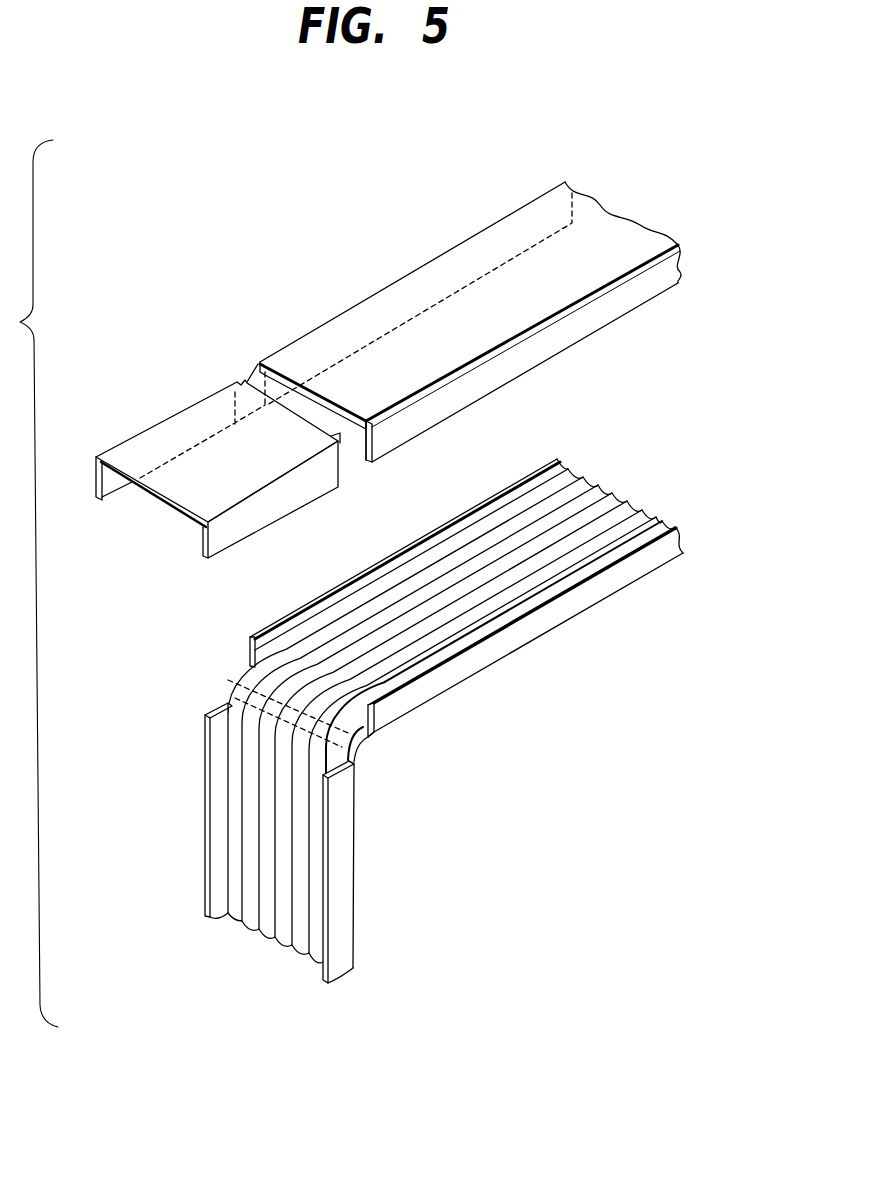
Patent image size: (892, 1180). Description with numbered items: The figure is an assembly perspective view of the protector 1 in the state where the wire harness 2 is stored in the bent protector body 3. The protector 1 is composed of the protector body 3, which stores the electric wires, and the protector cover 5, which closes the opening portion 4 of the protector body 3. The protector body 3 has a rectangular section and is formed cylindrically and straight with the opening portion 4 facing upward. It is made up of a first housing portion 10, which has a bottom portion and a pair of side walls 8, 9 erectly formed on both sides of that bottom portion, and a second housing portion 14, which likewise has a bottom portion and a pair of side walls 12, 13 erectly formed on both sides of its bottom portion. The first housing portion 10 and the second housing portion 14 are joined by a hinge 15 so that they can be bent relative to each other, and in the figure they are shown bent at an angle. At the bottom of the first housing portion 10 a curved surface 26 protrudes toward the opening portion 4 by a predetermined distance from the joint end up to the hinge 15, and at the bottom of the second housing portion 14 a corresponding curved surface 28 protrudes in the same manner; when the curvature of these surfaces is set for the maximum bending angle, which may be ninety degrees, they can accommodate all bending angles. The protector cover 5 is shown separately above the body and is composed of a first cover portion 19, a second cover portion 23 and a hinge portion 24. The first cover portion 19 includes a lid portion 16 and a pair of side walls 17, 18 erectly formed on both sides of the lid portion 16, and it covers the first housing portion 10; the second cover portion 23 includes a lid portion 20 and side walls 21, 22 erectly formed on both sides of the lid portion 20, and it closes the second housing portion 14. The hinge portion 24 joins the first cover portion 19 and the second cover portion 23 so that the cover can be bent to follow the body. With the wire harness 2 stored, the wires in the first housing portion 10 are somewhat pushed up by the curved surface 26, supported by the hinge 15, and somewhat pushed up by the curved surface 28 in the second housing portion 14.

The protector 1 is at (742, 338).
The wire harness 2 is at (275, 915).
The protector body 3 is at (661, 490).
The opening portion 4 is at (524, 591).
The protector cover 5 is at (649, 322).
The side wall 8 is at (512, 647).
The side wall 9 is at (457, 540).
The first housing portion 10 is at (633, 598).
The side wall 12 is at (345, 900).
The side wall 13 is at (215, 880).
The second housing portion 14 is at (190, 786).
The hinge 15 is at (380, 756).
The lid portion 16 is at (507, 277).
The side wall 17 is at (513, 363).
The side wall 18 is at (393, 307).
The first cover portion 19 is at (621, 187).
The lid portion 20 is at (230, 440).
The side wall 21 is at (267, 507).
The side wall 22 is at (95, 473).
The second cover portion 23 is at (150, 405).
The hinge portion 24 is at (277, 405).
The curved surface 26 is at (389, 738).
The curved surface 28 is at (368, 777).